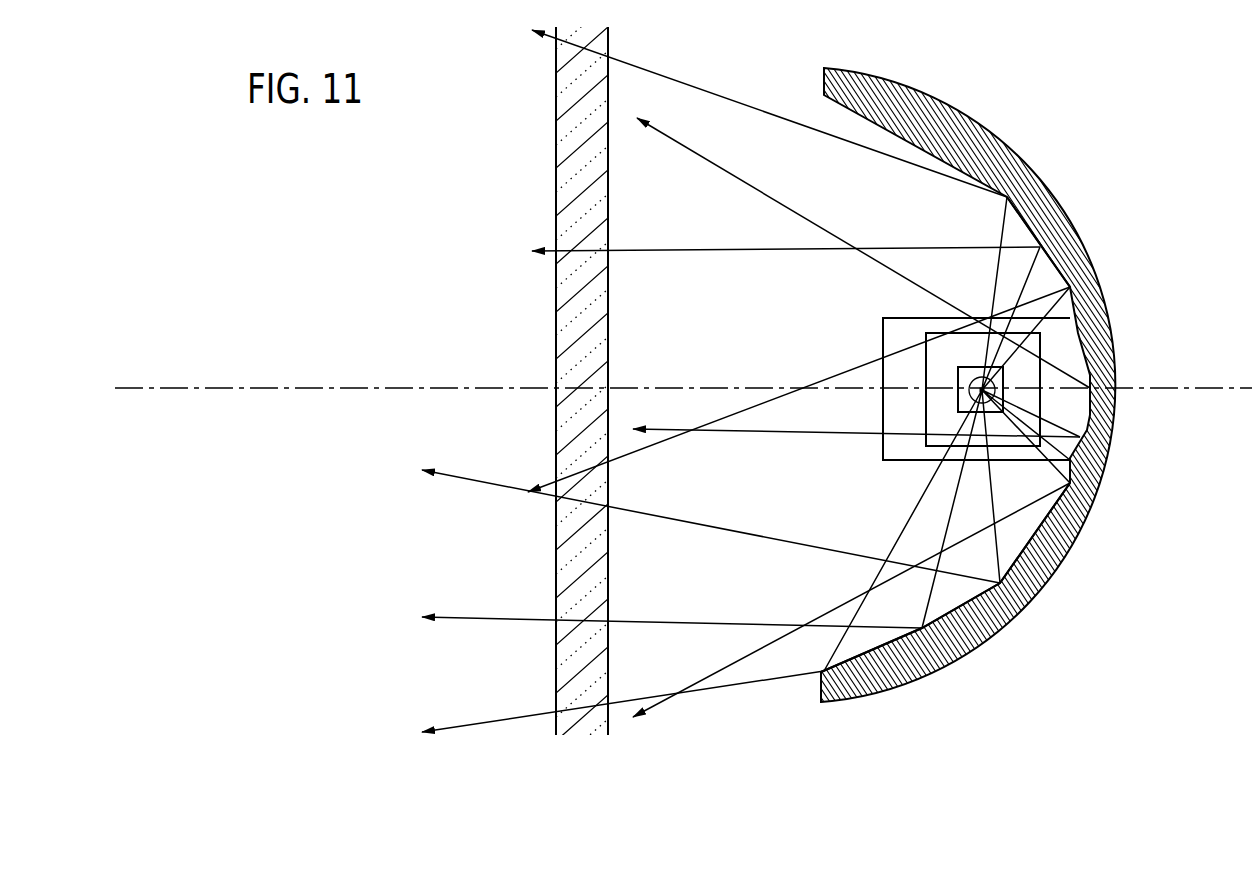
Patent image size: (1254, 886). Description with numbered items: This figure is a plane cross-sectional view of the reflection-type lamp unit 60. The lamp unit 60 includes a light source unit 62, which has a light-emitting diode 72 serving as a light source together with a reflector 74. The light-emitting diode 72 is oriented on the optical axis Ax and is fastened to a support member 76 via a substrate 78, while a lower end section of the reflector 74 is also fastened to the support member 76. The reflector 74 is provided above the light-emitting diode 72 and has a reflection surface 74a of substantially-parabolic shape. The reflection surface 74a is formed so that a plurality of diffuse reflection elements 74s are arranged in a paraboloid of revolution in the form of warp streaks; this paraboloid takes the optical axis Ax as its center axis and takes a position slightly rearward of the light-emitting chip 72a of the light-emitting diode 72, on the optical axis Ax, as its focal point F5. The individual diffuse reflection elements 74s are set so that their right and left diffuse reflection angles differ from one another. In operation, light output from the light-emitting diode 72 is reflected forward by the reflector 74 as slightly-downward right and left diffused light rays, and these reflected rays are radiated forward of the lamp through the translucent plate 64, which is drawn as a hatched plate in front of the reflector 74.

The lamp unit 60 is at (1112, 113).
The light source unit 62 is at (795, 153).
The translucent plate 64 is at (556, 155).
The light-emitting diode 72 is at (958, 376).
The light-emitting chip 72a is at (958, 403).
The reflector 74 is at (1073, 205).
The reflection surface 74a is at (1032, 233).
The diffuse reflection elements 74s is at (1020, 547).
The support member 76 is at (880, 320).
The substrate 78 is at (1045, 408).
The focal point F5 is at (992, 388).
The optical axis Ax is at (268, 388).